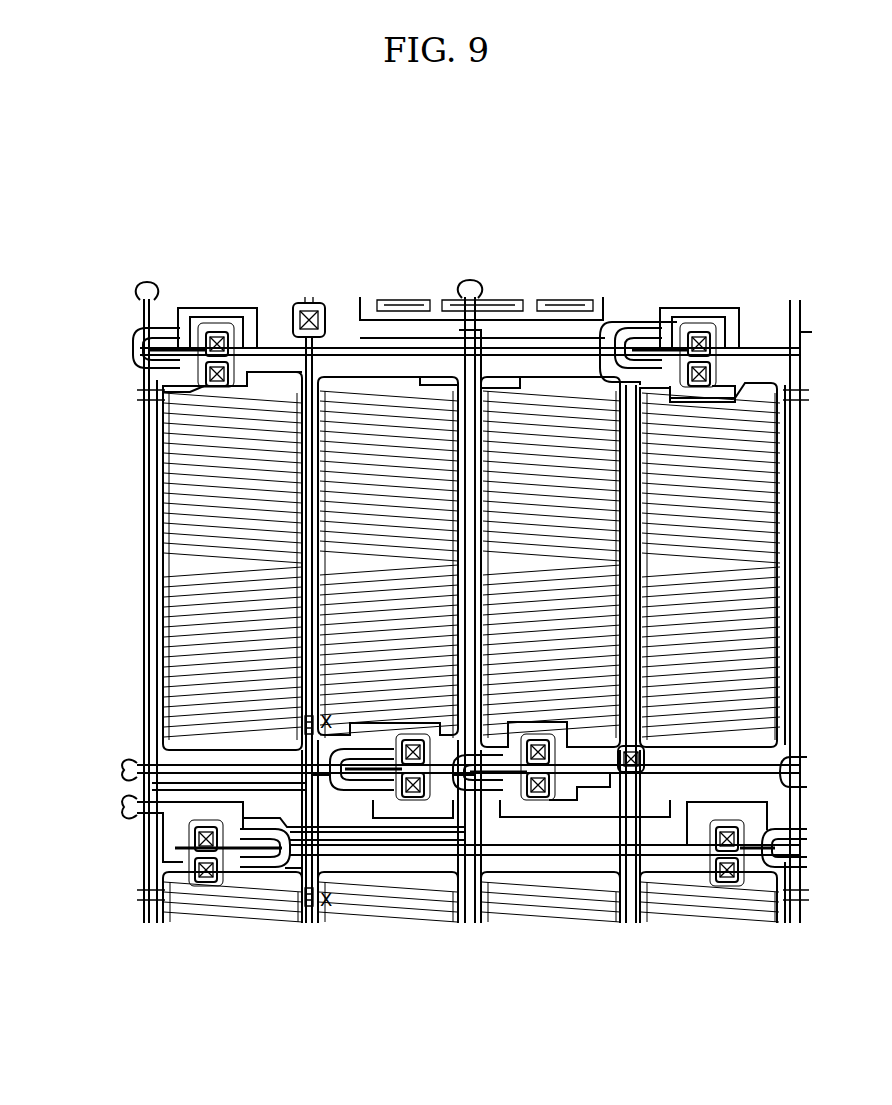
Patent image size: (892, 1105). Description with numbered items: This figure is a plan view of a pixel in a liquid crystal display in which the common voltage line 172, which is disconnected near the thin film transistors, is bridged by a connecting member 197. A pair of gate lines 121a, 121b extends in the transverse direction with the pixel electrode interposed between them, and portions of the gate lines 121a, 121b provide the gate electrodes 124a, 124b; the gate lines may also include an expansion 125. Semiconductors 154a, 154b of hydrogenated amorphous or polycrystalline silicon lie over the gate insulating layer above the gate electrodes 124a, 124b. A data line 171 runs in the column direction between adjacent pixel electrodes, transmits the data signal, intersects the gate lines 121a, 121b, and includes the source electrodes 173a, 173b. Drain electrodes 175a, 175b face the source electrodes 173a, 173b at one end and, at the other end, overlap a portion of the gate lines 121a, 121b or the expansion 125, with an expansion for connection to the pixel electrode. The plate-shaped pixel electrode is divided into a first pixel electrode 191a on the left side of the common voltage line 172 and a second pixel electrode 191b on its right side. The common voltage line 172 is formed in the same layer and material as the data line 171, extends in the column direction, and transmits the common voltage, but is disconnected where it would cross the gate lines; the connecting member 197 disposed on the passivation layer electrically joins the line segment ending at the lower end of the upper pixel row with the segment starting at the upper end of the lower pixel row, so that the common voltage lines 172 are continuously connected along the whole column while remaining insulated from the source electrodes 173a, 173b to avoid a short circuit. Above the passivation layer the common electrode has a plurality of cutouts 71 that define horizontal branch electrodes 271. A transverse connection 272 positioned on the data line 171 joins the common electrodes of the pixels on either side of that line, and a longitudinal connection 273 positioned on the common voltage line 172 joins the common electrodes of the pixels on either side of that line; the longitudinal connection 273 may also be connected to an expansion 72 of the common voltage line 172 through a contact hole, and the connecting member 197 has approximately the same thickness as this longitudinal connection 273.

The cutout 71 is at (170, 597).
The expansion of the common voltage line 72 is at (650, 880).
The gate line 121a is at (236, 307).
The gate line 121b is at (121, 770).
The gate electrode 124a is at (137, 363).
The gate electrode 124b is at (345, 790).
The expansion 125 is at (423, 807).
The semiconductor 154a is at (187, 333).
The semiconductor 154b is at (385, 795).
The data line 171 is at (147, 281).
The common voltage line 172 is at (313, 343).
The source electrode 173a is at (133, 343).
The source electrode 173b is at (362, 790).
The drain electrode 175a is at (200, 332).
The drain electrode 175b is at (405, 795).
The first pixel electrode 191a is at (260, 363).
The second pixel electrode 191b is at (447, 780).
The connecting member 197 is at (302, 865).
The branch electrode 271 is at (157, 535).
The transverse connection 272 is at (481, 385).
The longitudinal connection 273 is at (637, 410).